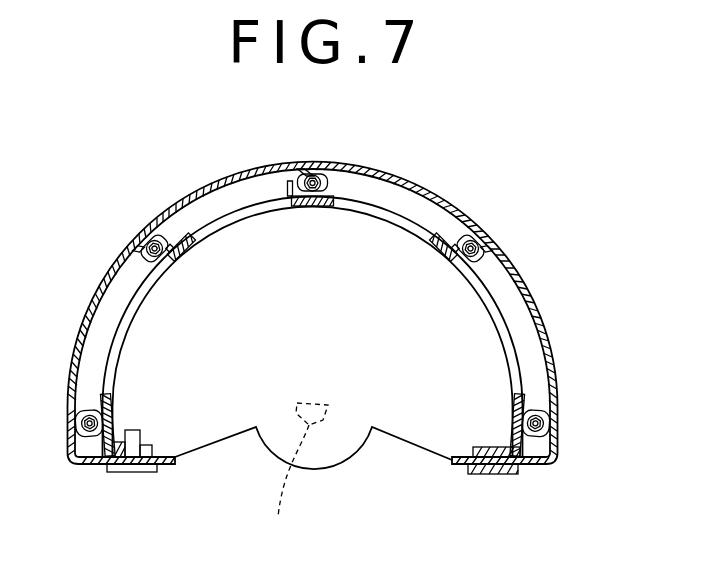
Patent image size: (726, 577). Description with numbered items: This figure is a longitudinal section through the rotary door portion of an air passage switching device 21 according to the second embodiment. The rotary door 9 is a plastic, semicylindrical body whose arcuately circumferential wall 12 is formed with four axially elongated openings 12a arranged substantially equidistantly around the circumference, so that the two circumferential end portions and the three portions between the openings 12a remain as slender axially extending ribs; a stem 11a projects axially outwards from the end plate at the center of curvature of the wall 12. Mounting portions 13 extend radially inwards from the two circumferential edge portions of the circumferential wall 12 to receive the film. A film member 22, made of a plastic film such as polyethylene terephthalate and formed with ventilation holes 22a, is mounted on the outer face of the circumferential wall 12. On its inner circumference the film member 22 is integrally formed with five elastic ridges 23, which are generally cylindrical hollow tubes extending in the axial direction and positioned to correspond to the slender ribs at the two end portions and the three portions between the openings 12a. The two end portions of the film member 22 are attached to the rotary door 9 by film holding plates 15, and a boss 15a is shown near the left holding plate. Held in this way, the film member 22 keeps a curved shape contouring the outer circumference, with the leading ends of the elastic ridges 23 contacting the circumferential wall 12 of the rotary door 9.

The rotary door 9 is at (374, 443).
The stem 11a is at (291, 477).
The circumferential wall 12 is at (357, 196).
The opening 12a is at (228, 218).
The mounting portion 13 is at (150, 447).
The film holding plate 15 is at (137, 473).
The boss 15a is at (134, 418).
The air passage switching device 21 is at (427, 176).
The film member 22 is at (462, 212).
The ventilation hole 22a is at (215, 183).
The elastic ridge 23 is at (487, 268).